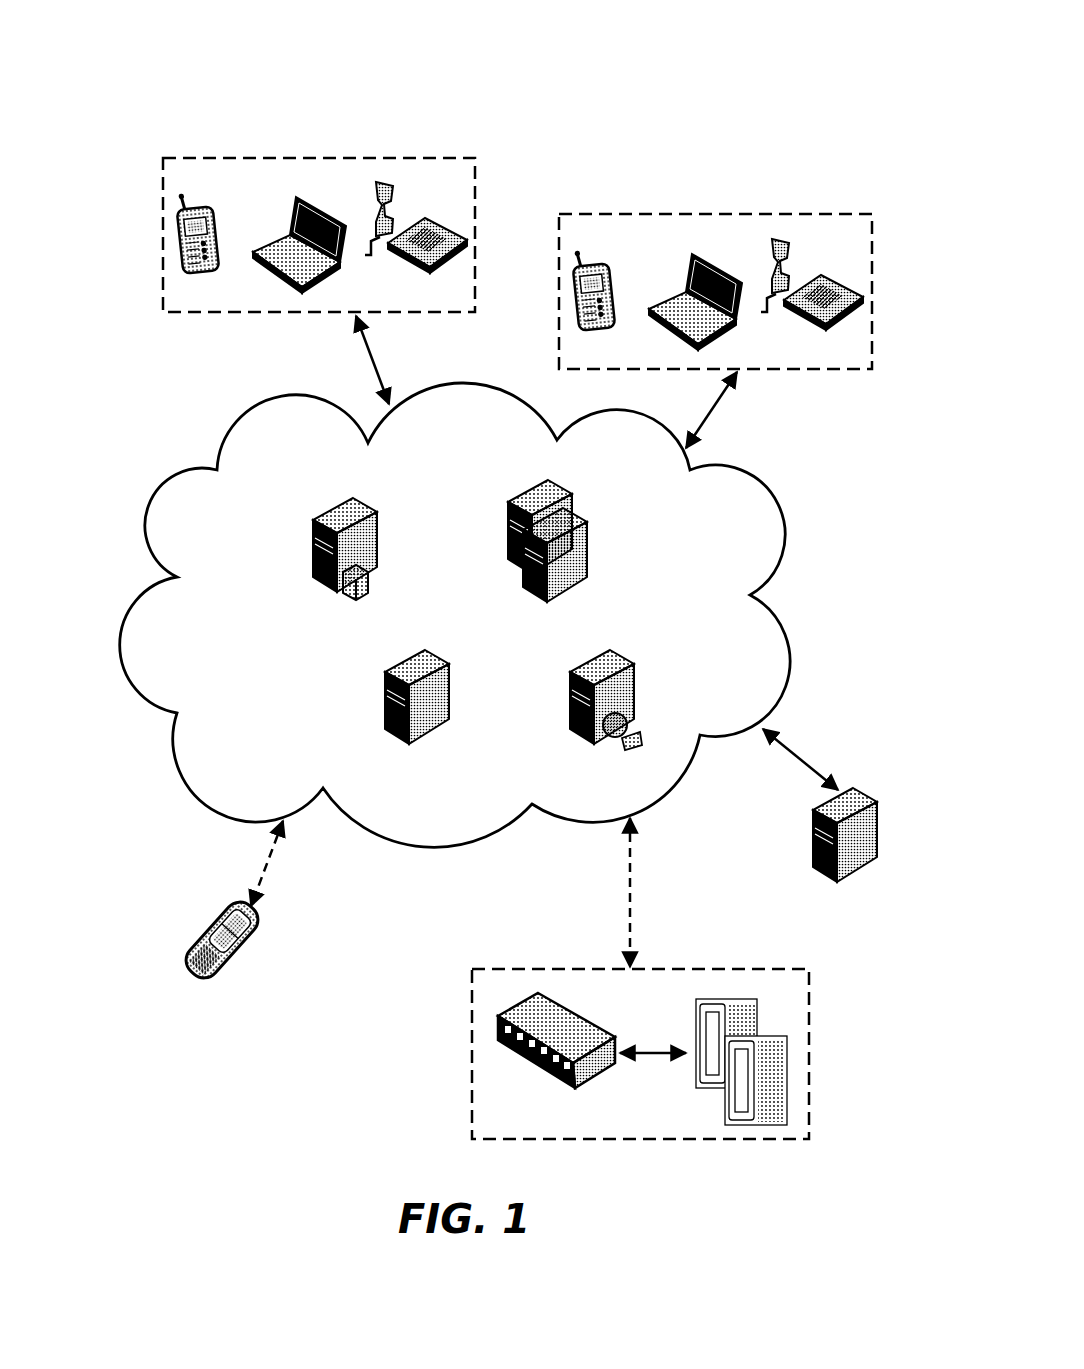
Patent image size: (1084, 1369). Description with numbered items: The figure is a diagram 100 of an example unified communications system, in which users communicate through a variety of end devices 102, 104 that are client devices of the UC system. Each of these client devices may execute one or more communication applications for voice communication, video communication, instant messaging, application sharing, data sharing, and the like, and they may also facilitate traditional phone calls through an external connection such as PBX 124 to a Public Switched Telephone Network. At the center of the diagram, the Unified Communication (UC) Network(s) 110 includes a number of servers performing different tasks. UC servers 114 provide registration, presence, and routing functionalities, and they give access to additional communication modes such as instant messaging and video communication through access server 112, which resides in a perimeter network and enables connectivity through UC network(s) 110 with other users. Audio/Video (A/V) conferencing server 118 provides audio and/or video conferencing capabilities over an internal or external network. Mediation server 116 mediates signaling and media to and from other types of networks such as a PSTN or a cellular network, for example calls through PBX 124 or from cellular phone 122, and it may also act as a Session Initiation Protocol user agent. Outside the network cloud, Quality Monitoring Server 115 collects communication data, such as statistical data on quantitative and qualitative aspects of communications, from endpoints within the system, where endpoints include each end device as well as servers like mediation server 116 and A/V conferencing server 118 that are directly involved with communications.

The diagram 100 is at (737, 58).
The end devices 102 is at (216, 153).
The end devices 104 is at (607, 210).
The Unified Communication (UC) Network(s) 110 is at (248, 406).
The access server 112 is at (341, 490).
The UC servers 114 is at (530, 478).
The Quality Monitoring Server (QMS) 115 is at (812, 800).
The mediation server 116 is at (395, 657).
The Audio/Video (A/V) conferencing server 118 is at (586, 658).
The cellular phone 122 is at (206, 925).
The PBX 124 is at (497, 956).